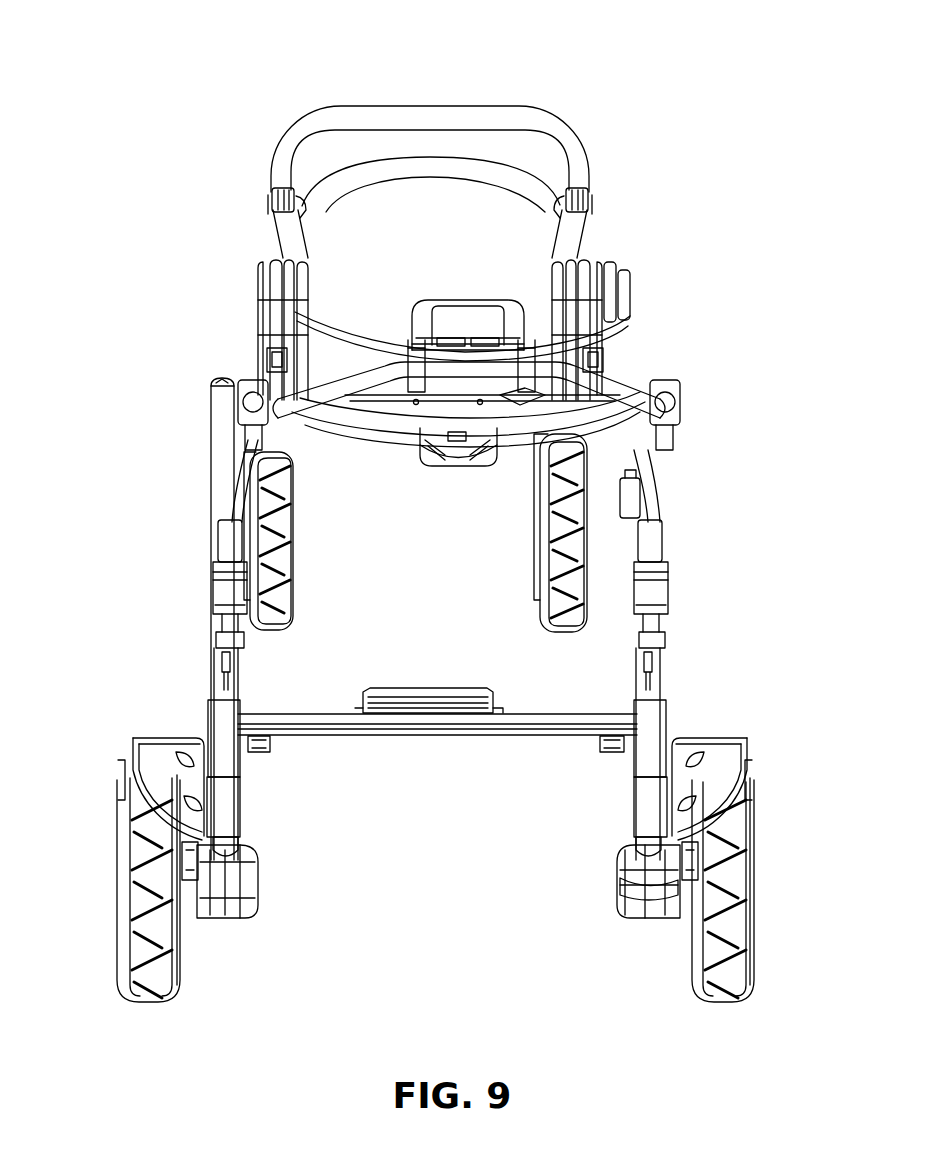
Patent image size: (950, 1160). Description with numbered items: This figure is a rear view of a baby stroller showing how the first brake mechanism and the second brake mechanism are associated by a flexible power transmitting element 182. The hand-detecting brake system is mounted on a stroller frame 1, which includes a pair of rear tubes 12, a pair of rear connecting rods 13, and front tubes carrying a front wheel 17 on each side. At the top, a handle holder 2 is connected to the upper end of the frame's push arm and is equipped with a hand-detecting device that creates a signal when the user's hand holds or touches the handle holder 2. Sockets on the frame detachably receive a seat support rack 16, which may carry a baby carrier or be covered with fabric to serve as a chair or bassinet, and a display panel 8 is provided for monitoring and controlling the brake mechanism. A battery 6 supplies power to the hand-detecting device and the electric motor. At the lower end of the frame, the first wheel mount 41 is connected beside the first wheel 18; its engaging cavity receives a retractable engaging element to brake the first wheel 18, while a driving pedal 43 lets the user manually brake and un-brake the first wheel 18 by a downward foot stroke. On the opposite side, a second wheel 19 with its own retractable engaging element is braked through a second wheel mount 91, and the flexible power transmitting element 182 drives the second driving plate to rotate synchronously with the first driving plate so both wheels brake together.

The stroller frame 1 is at (188, 194).
The seat support rack 16 is at (614, 208).
The display panel 8 is at (474, 320).
The handle holder 2 is at (608, 399).
The rear connecting rods 13 is at (232, 496).
The front wheel 17 is at (288, 578).
The rear tubes 12 is at (210, 650).
The flexible power transmitting element 182 is at (400, 740).
The battery 6 is at (436, 694).
The second wheel 19 is at (100, 870).
The second wheel mount 91 is at (260, 881).
The first wheel mount 41 is at (624, 851).
The driving pedal 43 is at (642, 896).
The first wheel 18 is at (746, 876).